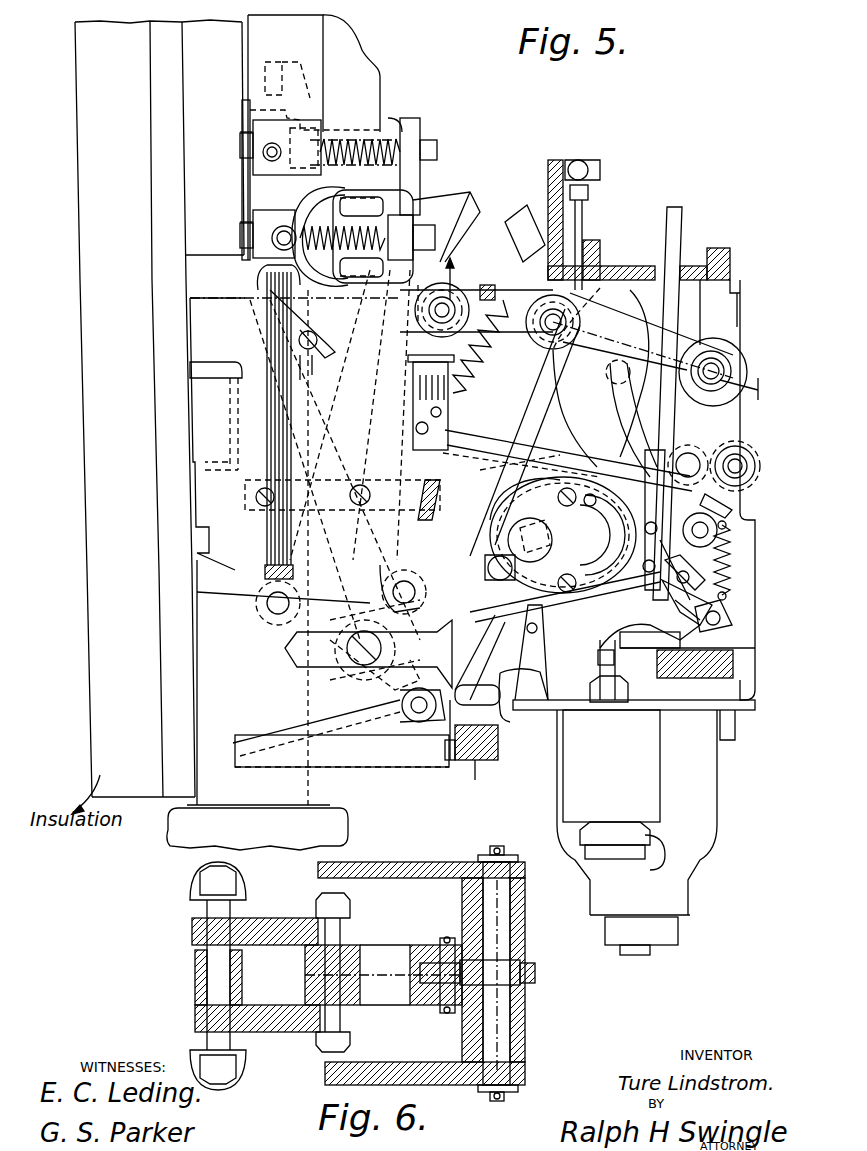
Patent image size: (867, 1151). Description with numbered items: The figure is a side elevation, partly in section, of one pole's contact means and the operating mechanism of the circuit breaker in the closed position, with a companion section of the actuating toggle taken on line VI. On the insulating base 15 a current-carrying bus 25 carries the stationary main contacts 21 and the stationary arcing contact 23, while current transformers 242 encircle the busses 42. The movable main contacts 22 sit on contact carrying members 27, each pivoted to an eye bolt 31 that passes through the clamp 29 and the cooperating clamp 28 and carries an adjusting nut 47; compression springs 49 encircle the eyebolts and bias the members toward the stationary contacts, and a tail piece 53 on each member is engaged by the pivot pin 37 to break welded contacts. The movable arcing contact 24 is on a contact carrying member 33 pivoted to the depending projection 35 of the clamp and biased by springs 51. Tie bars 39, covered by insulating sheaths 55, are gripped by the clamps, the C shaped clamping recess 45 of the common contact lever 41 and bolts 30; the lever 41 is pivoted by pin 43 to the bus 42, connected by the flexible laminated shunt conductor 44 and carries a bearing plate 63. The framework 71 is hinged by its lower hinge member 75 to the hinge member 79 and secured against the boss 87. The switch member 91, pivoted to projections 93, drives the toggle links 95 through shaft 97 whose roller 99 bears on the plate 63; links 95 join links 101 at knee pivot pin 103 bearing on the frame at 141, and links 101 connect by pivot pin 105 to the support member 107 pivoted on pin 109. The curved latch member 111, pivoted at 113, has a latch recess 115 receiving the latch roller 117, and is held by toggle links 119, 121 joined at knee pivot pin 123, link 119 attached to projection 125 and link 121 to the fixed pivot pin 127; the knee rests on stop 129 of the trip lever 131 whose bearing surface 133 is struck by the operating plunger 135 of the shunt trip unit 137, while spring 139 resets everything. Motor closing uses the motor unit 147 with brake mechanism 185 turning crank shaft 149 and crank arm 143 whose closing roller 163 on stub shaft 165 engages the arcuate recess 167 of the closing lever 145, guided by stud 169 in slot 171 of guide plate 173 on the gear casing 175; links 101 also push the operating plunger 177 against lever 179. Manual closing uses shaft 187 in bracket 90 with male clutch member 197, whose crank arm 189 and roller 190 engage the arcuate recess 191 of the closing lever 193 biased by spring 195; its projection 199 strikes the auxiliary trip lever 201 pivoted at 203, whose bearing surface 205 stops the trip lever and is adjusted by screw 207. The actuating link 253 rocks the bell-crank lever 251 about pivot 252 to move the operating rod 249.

In FIG. 5, the base 15 is at (75, 128).
In FIG. 5, the current-carrying bus 25 is at (192, 58).
In FIG. 5, the current transformers 242 is at (175, 838).
In FIG. 5, the contact carrying member 33 is at (302, 98).
In FIG. 5, the stationary arcing contact 23 is at (273, 62).
In FIG. 5, the movable arcing contact 24 is at (290, 62).
In FIG. 5, the eye bolt 31 is at (248, 165).
In FIG. 5, the movable main contacts 22 is at (244, 130).
In FIG. 5, the main stationary contacts 21 is at (240, 145).
In FIG. 5, the contact carrying members 27 is at (280, 170).
In FIG. 5, the compression springs 49 is at (392, 135).
In FIG. 5, the compression springs 51 is at (400, 125).
In FIG. 5, the clamps 28 is at (420, 128).
In FIG. 5, the adjusting nuts 47 is at (436, 152).
In FIG. 5, the tie bars 39 is at (365, 197).
In FIG. 5, the C shaped clamping recess 45 is at (400, 233).
In FIG. 5, the insulating sheaths 55 is at (390, 196).
In FIG. 5, the bolts 30 is at (470, 192).
In FIG. 5, the tail piece 53 is at (310, 298).
In FIG. 5, the clamp 29 is at (340, 298).
In FIG. 5, the depending projection 35 is at (322, 336).
In FIG. 5, the pivot pin 37 is at (318, 352).
In FIG. 5, the flexible laminated shunt conductor 44 is at (265, 330).
In FIG. 5, the common contact lever 41 is at (335, 398).
In FIG. 5, the bearing plate 63 is at (408, 340).
In FIG. 5, the boss 87 is at (430, 376).
In FIG. 5, the switch member 91 is at (398, 518).
In FIG. 5, the current carrying bus 42 is at (300, 782).
In FIG. 5, the pivot pin 43 is at (256, 603).
In FIG. 5, the male clutch member 197 is at (287, 648).
In FIG. 5, the crank arm 189 is at (400, 652).
In FIG. 5, the arcuate recess 191 is at (440, 612).
In FIG. 5, the shaft 187 is at (350, 668).
In FIG. 5, the projections 93 is at (393, 590).
In FIG. 5, the gear casing 175 is at (422, 696).
In FIG. 5, the second bracket 90 is at (262, 738).
In FIG. 5, the roller 190 is at (425, 767).
In FIG. 5, the hinge member 79 is at (498, 746).
In FIG. 5, the lower hinge member 75 is at (477, 777).
In FIG. 5, the projection 199 is at (460, 652).
In FIG. 5, the pivot 203 is at (530, 626).
In FIG. 5, the adjusting screw 207 is at (524, 682).
In FIG. 5, the auxiliary trip lever 201 is at (527, 696).
In FIG. 5, the bearing surface 141 is at (535, 232).
In FIG. 5, the roller 99 is at (498, 280).
In FIG. 6, the roller 99 is at (195, 972).
In FIG. 5, the lever 179 is at (592, 166).
In FIG. 5, the operating plunger 177 is at (584, 210).
In FIG. 5, the operating rod 249 is at (682, 218).
In FIG. 5, the toggle links 101 is at (634, 266).
In FIG. 6, the toggle links 101 is at (420, 945).
In FIG. 5, the framework 71 is at (732, 256).
In FIG. 6, the framework 71 is at (432, 862).
In FIG. 5, the shaft 97 is at (455, 292).
In FIG. 6, the shaft 97 is at (207, 960).
In FIG. 5, the toggle links 95 is at (484, 290).
In FIG. 6, the toggle links 95 is at (282, 918).
In FIG. 5, the knee pivot pin 103 is at (580, 320).
In FIG. 6, the knee pivot pin 103 is at (342, 918).
In FIG. 5, the spring 195 is at (500, 335).
In FIG. 5, the pivot pin 105 is at (740, 320).
In FIG. 6, the pivot pin 105 is at (447, 1015).
In FIG. 5, the support member 107 is at (733, 362).
In FIG. 6, the support member 107 is at (535, 970).
In FIG. 5, the pin 109 is at (722, 372).
In FIG. 6, the pin 109 is at (493, 1095).
In FIG. 5, the section line VI— VI is at (611, 329).
In FIG. 5, the closing lever 145 is at (555, 400).
In FIG. 5, the latch member 111 is at (612, 405).
In FIG. 5, the actuating link 253 is at (505, 432).
In FIG. 5, the manually operable closing lever 193 is at (521, 465).
In FIG. 5, the guide plate 173 is at (555, 590).
In FIG. 5, the crank arm 143 is at (515, 520).
In FIG. 5, the crank shaft 149 is at (592, 535).
In FIG. 5, the arcuate guide slot 171 is at (552, 540).
In FIG. 5, the arcuate recess 167 is at (560, 500).
In FIG. 5, the guide stud 169 is at (588, 506).
In FIG. 5, the stub shaft 165 is at (560, 582).
In FIG. 5, the closing roller 163 is at (492, 582).
In FIG. 5, the bearing surface 133 is at (610, 600).
In FIG. 5, the projection 125 is at (645, 570).
In FIG. 5, the latch roller 117 is at (702, 460).
In FIG. 5, the pivot 113 is at (745, 467).
In FIG. 5, the latch recess 115 is at (722, 492).
In FIG. 5, the pivot 252 is at (730, 508).
In FIG. 5, the spring 139 is at (735, 535).
In FIG. 5, the bell-crank lever 251 is at (732, 545).
In FIG. 5, the toggle link 119 is at (701, 536).
In FIG. 5, the knee pivot pin 123 is at (690, 575).
In FIG. 5, the toggle link 121 is at (728, 590).
In FIG. 5, the stop 129 is at (686, 602).
In FIG. 5, the fixed pivot pin 127 is at (732, 620).
In FIG. 5, the trip lever 131 is at (650, 636).
In FIG. 5, the bearing surface 205 is at (650, 642).
In FIG. 5, the operating plunger 135 is at (616, 670).
In FIG. 5, the shunt trip unit 137 is at (563, 770).
In FIG. 5, the motor unit 147 is at (718, 755).
In FIG. 5, the brake mechanism 185 is at (680, 932).